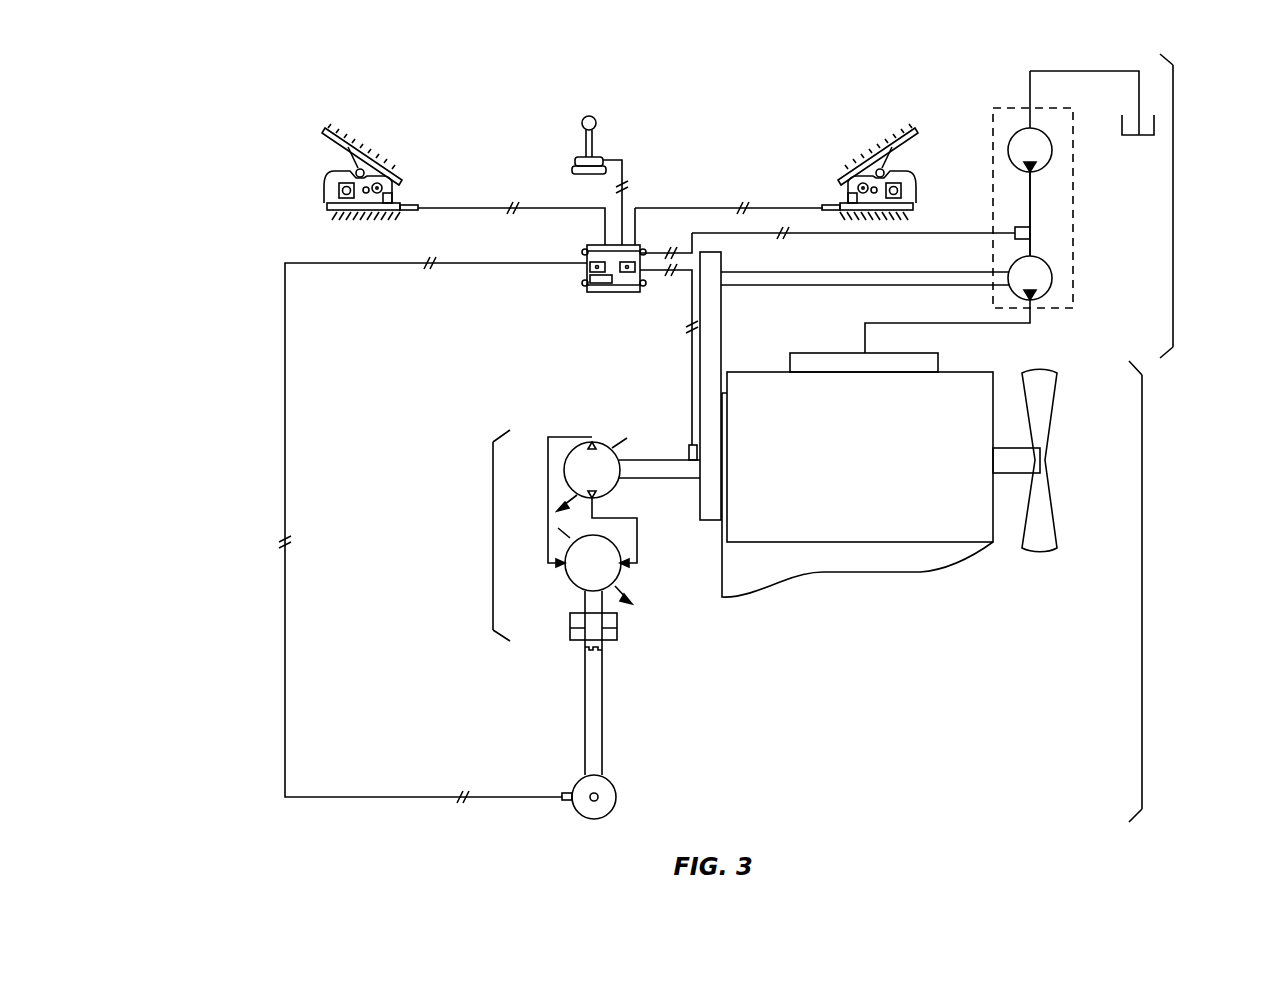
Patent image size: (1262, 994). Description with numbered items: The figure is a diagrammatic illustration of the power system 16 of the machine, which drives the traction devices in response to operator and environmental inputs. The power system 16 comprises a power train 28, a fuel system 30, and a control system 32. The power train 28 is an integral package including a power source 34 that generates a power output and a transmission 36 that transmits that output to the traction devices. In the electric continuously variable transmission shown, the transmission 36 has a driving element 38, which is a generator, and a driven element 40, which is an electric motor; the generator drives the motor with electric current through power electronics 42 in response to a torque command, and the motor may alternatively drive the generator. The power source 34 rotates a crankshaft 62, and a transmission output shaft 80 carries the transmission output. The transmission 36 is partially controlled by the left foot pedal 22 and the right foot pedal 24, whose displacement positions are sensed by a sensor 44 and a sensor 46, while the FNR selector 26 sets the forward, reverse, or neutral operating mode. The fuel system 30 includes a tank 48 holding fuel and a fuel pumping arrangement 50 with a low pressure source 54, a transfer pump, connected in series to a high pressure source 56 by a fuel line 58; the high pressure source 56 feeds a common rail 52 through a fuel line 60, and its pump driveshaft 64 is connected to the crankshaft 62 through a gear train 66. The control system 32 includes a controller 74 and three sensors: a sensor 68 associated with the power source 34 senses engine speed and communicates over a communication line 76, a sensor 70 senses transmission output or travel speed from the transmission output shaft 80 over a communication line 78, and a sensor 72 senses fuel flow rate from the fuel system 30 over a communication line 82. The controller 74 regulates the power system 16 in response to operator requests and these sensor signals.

The power system 16 is at (220, 260).
The left foot pedal 22 is at (350, 152).
The right foot pedal 24 is at (916, 133).
The forward-neutral-reverse (FNR) selector 26 is at (595, 120).
The power train 28 is at (1142, 589).
The fuel system 30 is at (1173, 207).
The control system 32 is at (724, 103).
The power source 34 is at (889, 483).
The transmission 36 is at (493, 527).
The driving element 38 is at (565, 478).
The driven element 40 is at (563, 578).
The power electronics 42 is at (556, 437).
The sensor 44 is at (412, 204).
The sensor 46 is at (828, 203).
The tank 48 is at (1146, 135).
The fuel pumping arrangement 50 is at (1074, 210).
The common rail 52 is at (938, 360).
The low pressure source 54 is at (1013, 132).
The high pressure source 56 is at (1052, 273).
The fuel line 58 is at (1028, 183).
The fuel line 60 is at (915, 323).
The crankshaft 62 is at (662, 479).
The pump driveshaft 64 is at (821, 286).
The gear train 66 is at (722, 327).
The sensor 68 is at (689, 447).
The sensor 70 is at (571, 795).
The sensor 72 is at (1015, 232).
The controller 74 is at (582, 291).
The communication line 76 is at (692, 312).
The communication line 78 is at (286, 683).
The transmission output shaft 80 is at (603, 728).
The communication line 82 is at (930, 232).